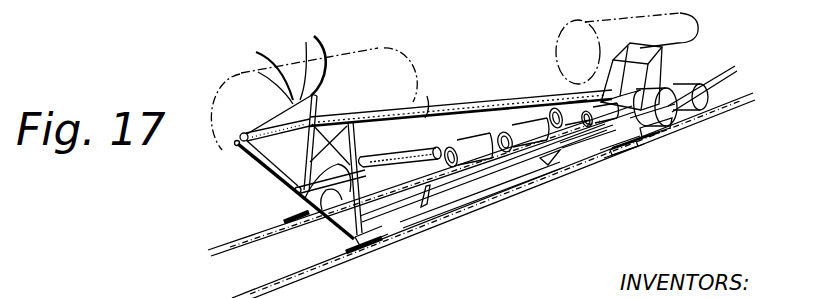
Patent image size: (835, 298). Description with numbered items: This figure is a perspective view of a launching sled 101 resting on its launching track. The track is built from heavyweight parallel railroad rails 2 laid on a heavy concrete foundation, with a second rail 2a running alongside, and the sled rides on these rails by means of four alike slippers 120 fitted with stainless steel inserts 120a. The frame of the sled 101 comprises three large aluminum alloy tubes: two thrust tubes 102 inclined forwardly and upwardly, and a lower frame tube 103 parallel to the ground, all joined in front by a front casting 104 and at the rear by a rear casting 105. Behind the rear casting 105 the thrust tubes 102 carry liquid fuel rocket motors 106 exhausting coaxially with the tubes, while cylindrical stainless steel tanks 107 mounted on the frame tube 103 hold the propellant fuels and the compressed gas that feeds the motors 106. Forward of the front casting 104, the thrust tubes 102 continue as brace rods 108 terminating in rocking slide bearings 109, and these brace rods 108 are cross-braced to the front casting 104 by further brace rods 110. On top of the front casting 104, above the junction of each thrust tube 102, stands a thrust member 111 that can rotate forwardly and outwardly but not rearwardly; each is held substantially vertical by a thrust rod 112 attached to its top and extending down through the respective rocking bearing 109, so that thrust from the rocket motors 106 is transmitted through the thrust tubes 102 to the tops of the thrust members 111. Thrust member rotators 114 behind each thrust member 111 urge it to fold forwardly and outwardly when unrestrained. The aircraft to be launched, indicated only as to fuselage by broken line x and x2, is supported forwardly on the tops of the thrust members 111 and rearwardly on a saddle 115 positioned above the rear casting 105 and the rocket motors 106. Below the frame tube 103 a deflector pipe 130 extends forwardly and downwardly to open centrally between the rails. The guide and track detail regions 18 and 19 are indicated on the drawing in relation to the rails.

The railroad rails 2 is at (310, 280).
The rail 2a is at (258, 241).
The track 18 is at (612, 139).
The guide bar 19 is at (520, 184).
The launching sled 101 is at (469, 80).
The thrust tubes 102 is at (428, 128).
The lower frame tube 103 is at (380, 224).
The front casting 104 is at (368, 244).
The rear casting 105 is at (652, 130).
The liquid fuel rocket motors 106 is at (694, 100).
The cylindrical tanks 107 is at (568, 118).
The brace rods 108 is at (286, 187).
The rocking slide bearings 109 is at (234, 150).
The brace rods 110 is at (246, 158).
The thrust member 111 is at (392, 96).
The thrust rods 112 is at (299, 108).
The thrust member rotators 114 is at (348, 121).
The saddle 115 is at (690, 26).
The slippers 120 is at (352, 272).
The stainless steel inserts 120a is at (709, 74).
The deflector pipe 130 is at (449, 206).
The aircraft fuselage x is at (411, 32).
The phantom cylinder x2 is at (553, 7).